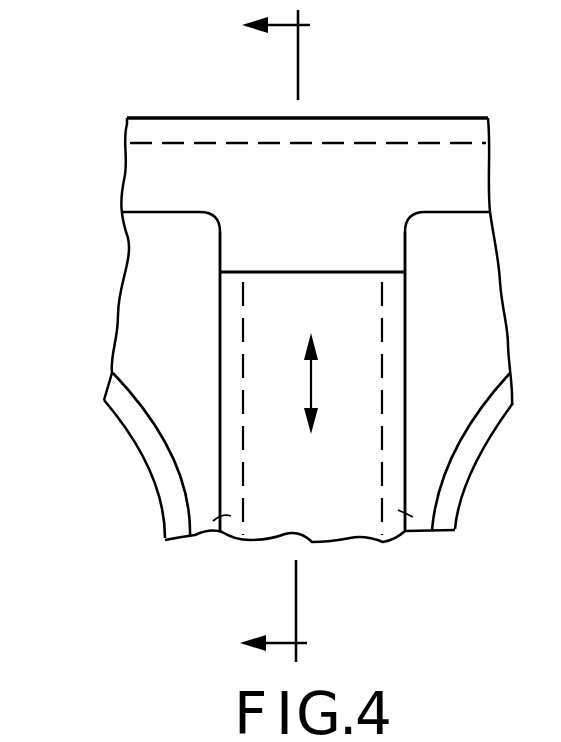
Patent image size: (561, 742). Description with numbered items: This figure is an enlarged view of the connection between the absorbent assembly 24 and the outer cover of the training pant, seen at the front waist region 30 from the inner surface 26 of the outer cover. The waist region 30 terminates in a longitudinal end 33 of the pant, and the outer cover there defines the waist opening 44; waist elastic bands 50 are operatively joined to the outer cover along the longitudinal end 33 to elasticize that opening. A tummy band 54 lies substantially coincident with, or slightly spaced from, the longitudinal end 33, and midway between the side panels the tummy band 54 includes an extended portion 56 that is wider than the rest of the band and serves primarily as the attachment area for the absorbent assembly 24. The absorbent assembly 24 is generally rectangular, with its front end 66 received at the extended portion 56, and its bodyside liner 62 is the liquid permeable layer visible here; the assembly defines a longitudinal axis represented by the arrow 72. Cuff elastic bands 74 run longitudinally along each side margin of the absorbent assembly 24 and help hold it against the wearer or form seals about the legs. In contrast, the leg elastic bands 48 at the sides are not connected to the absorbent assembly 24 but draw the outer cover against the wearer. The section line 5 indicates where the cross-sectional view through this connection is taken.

The section line 5- 5 is at (288, 339).
The absorbent assembly 24 is at (220, 463).
The inner surface 26 is at (492, 373).
The front waist region 30 is at (109, 205).
The longitudinal ends 33 is at (343, 118).
The waist opening 44 is at (415, 118).
The leg elastic bands 48 is at (461, 477).
The waist elastic bands 50 is at (463, 132).
The tummy band 54 is at (186, 165).
The extended portion 56 is at (410, 240).
The bodyside liner 62 is at (321, 528).
The front end 66 is at (220, 300).
The arrow 72 is at (313, 380).
The cuff elastic bands 74 is at (210, 528).